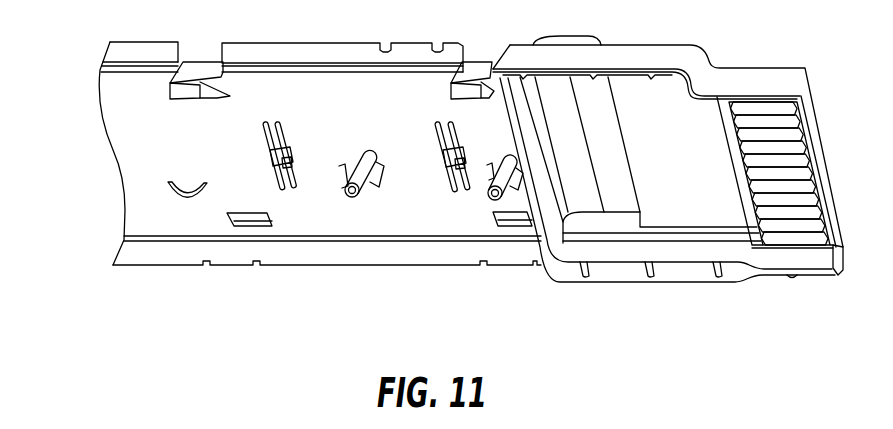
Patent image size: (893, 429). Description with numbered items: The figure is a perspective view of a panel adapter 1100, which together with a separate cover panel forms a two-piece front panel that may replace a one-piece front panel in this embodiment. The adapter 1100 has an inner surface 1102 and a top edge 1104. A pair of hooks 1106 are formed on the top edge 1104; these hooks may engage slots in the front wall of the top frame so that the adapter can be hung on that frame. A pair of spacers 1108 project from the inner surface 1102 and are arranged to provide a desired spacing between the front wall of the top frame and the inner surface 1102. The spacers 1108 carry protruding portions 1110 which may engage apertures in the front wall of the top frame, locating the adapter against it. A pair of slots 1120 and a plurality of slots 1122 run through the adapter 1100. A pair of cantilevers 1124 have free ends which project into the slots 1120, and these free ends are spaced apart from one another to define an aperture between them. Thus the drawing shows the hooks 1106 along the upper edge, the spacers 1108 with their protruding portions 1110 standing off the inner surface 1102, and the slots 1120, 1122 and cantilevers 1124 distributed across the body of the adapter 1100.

The panel adapter 1100 is at (439, 154).
The inner surface 1102 is at (306, 222).
The top edge 1104 is at (338, 57).
The hooks 1106 is at (207, 67).
The spacers 1108 is at (422, 163).
The protruding portions 1110 is at (491, 197).
The slots 1120 is at (286, 152).
The slots 1122 is at (215, 88).
The cantilevers 1124 is at (278, 123).